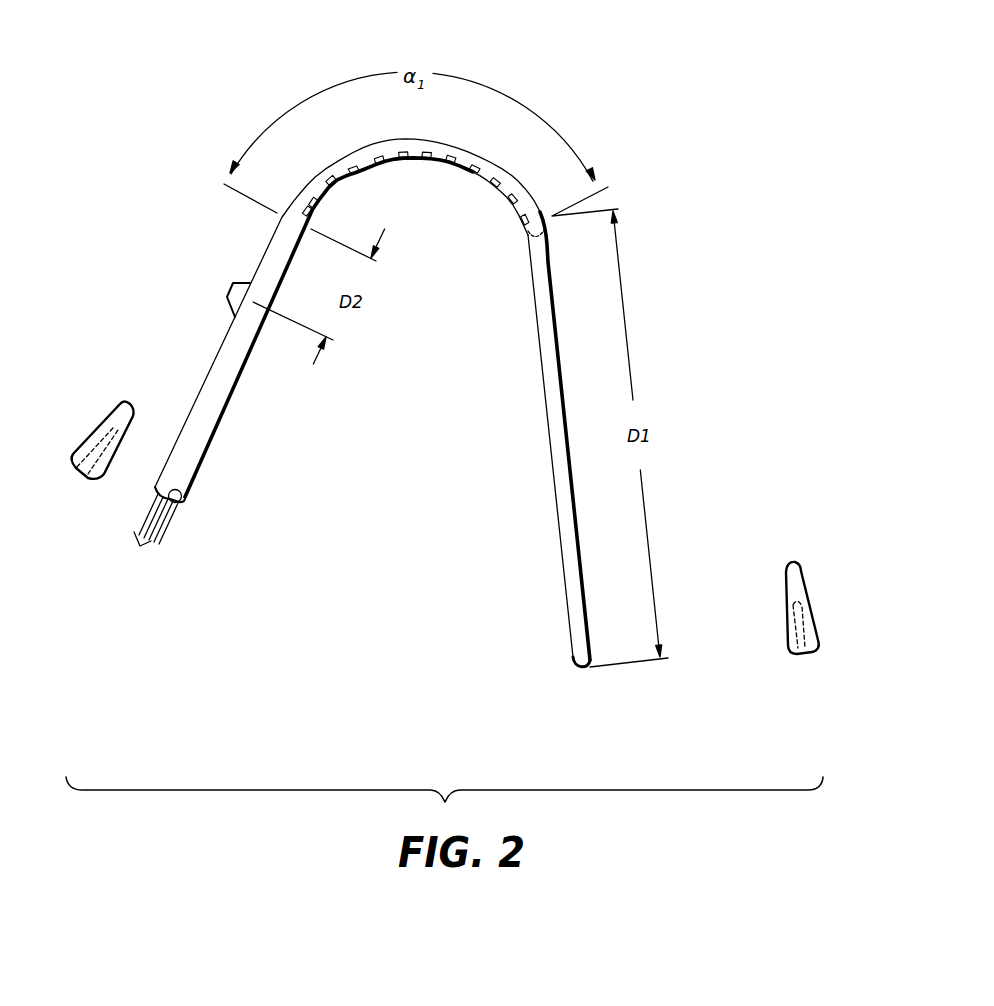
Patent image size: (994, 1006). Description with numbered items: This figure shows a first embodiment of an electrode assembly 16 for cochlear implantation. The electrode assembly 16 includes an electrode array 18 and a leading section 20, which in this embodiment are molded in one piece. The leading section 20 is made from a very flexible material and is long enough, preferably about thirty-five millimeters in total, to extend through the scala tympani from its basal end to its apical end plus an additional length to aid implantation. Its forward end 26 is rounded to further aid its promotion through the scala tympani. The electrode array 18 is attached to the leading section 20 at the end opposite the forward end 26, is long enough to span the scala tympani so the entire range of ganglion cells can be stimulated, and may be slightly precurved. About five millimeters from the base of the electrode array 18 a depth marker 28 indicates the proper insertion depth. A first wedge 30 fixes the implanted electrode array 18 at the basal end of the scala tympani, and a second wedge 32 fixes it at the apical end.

The electrode assembly 16 is at (412, 372).
The electrode array 18 is at (417, 153).
The leading section 20 is at (557, 425).
The forward end 26 is at (584, 667).
The depth marker 28 is at (227, 295).
The first wedge 30 is at (113, 413).
The second wedge 32 is at (792, 563).